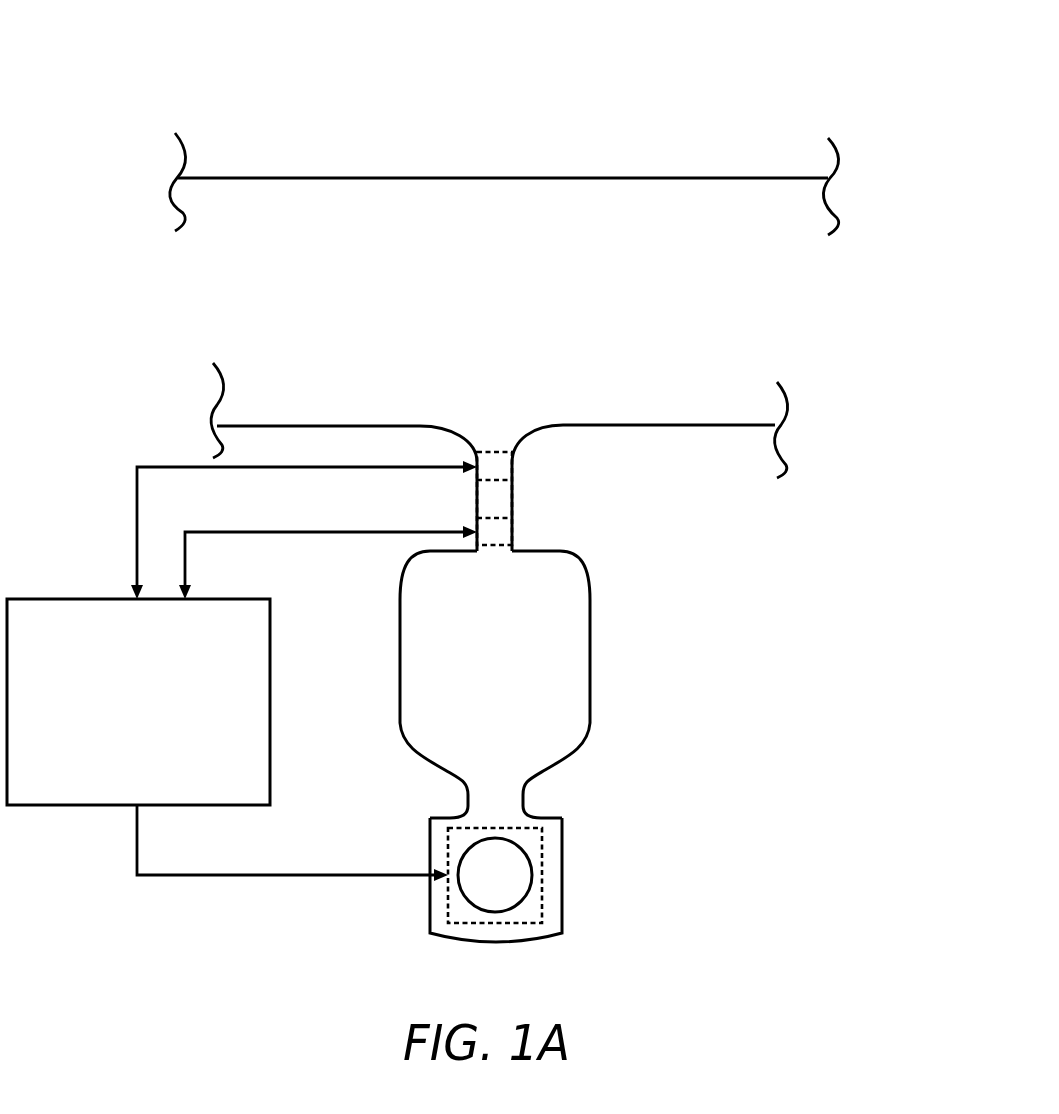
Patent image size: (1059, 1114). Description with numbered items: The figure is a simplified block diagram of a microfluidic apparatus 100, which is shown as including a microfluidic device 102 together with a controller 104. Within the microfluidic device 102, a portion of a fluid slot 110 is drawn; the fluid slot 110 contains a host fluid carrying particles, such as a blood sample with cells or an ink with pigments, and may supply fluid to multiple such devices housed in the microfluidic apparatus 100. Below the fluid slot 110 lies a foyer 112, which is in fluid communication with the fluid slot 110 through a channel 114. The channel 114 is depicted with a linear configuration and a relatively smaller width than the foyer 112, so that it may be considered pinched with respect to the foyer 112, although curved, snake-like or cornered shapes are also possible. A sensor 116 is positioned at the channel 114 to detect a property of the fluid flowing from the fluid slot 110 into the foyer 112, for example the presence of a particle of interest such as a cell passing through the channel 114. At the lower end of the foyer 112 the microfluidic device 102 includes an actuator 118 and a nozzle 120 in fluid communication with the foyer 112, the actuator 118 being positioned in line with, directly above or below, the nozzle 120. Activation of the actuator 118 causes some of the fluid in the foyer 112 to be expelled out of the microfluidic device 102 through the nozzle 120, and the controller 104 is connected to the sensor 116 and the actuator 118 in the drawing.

The microfluidic apparatus 100 is at (277, 90).
The microfluidic device 102 is at (730, 572).
The controller 104 is at (158, 727).
The fluid slot 110 is at (515, 272).
The foyer 112 is at (515, 697).
The channel 114 is at (580, 512).
The sensor 116 is at (470, 414).
The actuator 118 is at (542, 855).
The nozzle 120 is at (520, 907).